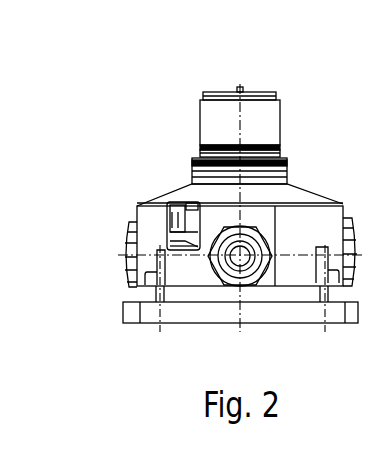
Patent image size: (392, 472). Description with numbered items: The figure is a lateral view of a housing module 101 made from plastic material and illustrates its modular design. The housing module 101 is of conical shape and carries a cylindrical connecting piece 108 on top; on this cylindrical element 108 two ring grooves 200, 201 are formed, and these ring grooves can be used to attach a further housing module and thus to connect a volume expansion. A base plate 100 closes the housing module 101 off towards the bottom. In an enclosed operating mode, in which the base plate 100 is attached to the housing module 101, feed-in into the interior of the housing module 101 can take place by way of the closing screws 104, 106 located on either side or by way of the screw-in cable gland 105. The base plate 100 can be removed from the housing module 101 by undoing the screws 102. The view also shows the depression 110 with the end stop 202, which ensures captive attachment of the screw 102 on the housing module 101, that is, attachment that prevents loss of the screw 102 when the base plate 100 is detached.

The base plate 100 is at (124, 310).
The housing module 101 is at (320, 191).
The screws 102 is at (162, 285).
The closing screw 104 is at (350, 218).
The screw-in cable gland 105 is at (258, 214).
The closing screw 106 is at (128, 224).
The cylindrical connecting piece 108 is at (199, 123).
The depression 110 is at (168, 262).
The ring groove 200 is at (199, 150).
The ring groove 201 is at (277, 93).
The end stop 202 is at (322, 247).